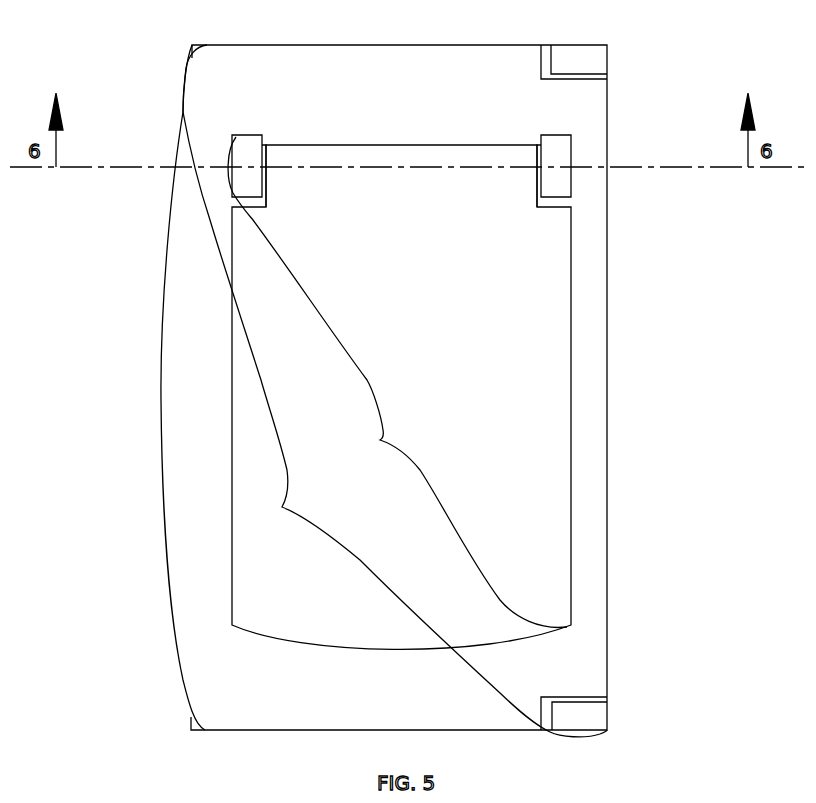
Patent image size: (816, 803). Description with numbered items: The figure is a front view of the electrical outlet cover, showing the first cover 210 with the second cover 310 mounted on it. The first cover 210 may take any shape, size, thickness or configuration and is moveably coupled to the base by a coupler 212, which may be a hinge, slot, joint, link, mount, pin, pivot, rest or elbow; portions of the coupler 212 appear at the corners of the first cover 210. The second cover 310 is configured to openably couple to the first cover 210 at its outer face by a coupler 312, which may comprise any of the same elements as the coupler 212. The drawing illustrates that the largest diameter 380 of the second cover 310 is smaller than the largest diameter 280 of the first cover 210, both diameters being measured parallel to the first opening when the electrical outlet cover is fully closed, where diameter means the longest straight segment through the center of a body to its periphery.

The first cover 210 is at (587, 281).
The coupler 212 is at (576, 62).
The second cover 310 is at (500, 368).
The coupler 312 is at (558, 150).
The largest diameter of the first cover 280 is at (395, 391).
The largest diameter of the second cover 380 is at (397, 382).